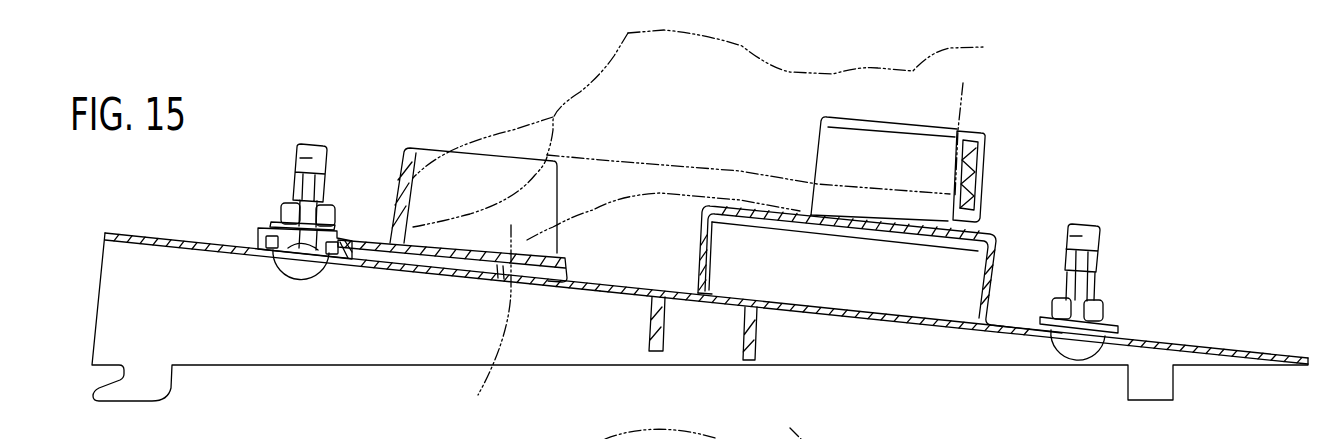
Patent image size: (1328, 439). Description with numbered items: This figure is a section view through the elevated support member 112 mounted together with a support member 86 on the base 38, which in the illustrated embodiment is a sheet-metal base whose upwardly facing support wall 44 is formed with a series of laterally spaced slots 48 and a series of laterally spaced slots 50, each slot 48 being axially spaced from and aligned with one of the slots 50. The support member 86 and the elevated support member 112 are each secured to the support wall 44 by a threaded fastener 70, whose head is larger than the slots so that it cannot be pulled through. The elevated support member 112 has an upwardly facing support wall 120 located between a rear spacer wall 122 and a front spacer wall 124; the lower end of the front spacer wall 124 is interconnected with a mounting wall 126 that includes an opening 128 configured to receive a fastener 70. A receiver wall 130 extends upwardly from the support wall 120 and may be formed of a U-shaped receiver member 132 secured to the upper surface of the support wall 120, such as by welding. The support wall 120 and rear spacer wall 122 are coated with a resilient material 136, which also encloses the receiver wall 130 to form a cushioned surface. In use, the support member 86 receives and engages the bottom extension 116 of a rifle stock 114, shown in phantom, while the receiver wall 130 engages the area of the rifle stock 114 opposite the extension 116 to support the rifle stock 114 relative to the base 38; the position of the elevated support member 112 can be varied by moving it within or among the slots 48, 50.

The base 38 is at (1245, 338).
The support wall 44 is at (166, 234).
The slots 48 is at (946, 322).
The slots 50 is at (437, 268).
The threaded fastener 70 is at (298, 141).
The support member 86 is at (405, 117).
The elevated support member 112 is at (1006, 214).
The rifle stock 114 is at (716, 234).
The bottom extension 116 is at (484, 327).
The support wall 120 is at (780, 205).
The rear spacer wall 122 is at (706, 247).
The front spacer wall 124 is at (1000, 272).
The mounting wall 126 is at (1110, 332).
The opening 128 is at (1083, 330).
The receiver wall 130 is at (995, 129).
The U-shaped receiver member 132 is at (976, 164).
The resilient material 136 is at (822, 226).